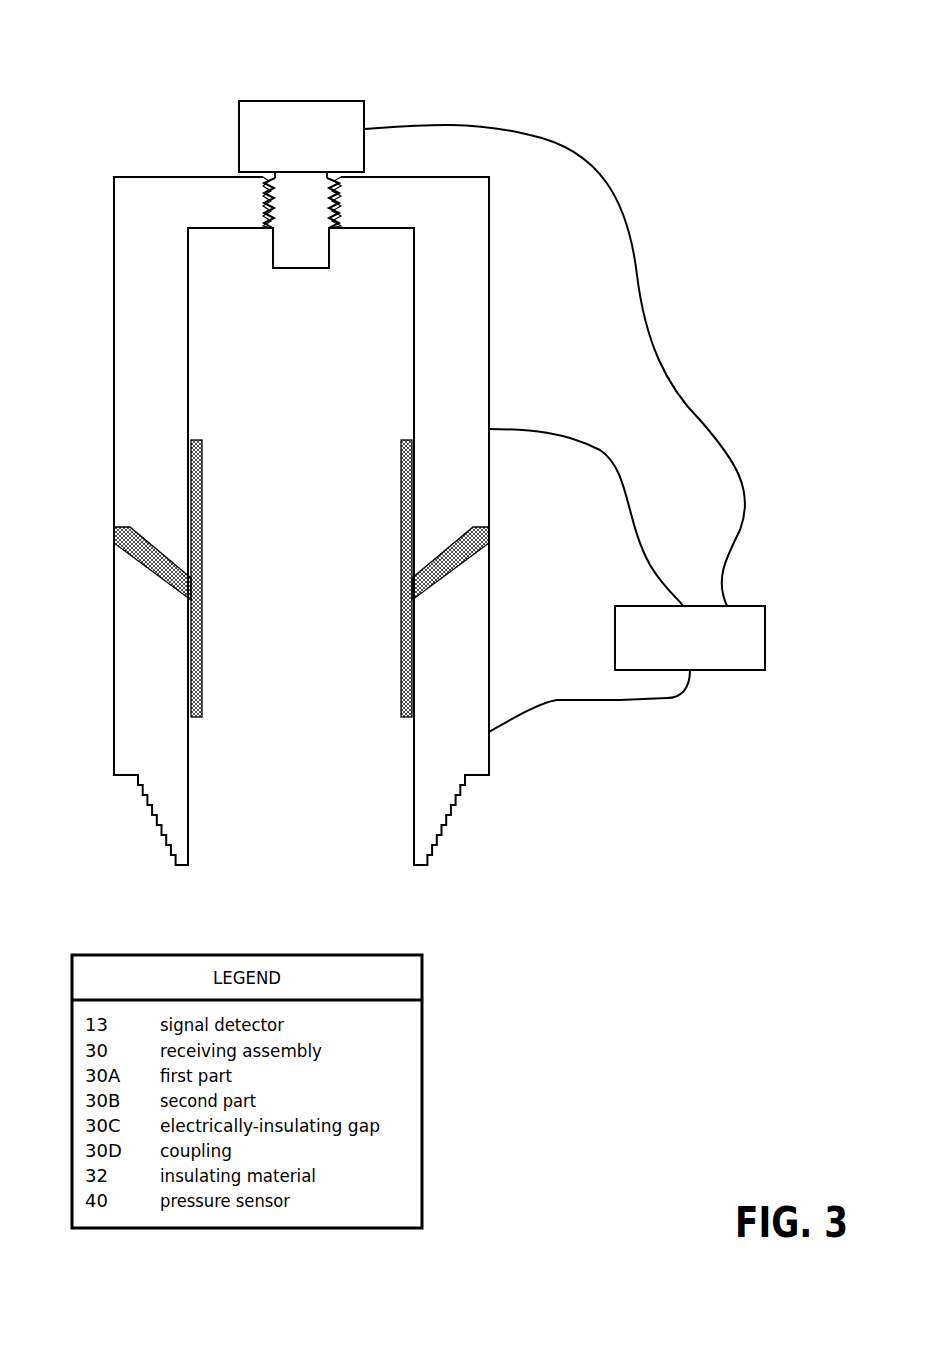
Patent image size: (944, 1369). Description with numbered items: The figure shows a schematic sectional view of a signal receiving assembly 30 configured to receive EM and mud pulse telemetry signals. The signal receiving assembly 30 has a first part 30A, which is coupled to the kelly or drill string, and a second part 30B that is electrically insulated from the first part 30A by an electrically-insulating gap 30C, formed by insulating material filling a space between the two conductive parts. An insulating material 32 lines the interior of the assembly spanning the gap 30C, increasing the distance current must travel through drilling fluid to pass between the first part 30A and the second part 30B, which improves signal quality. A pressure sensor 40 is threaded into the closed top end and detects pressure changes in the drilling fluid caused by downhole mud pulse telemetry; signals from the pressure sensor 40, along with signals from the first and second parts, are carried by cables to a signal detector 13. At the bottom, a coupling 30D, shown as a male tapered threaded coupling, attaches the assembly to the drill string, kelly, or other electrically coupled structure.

The signal detector 13 is at (718, 670).
The signal receiving assembly 30 is at (163, 120).
The first part 30A is at (146, 698).
The second part 30B is at (150, 415).
The electrically-insulating gap 30C is at (150, 560).
The coupling 30D is at (173, 794).
The insulating material 32 is at (193, 497).
The pressure sensor 40 is at (298, 126).